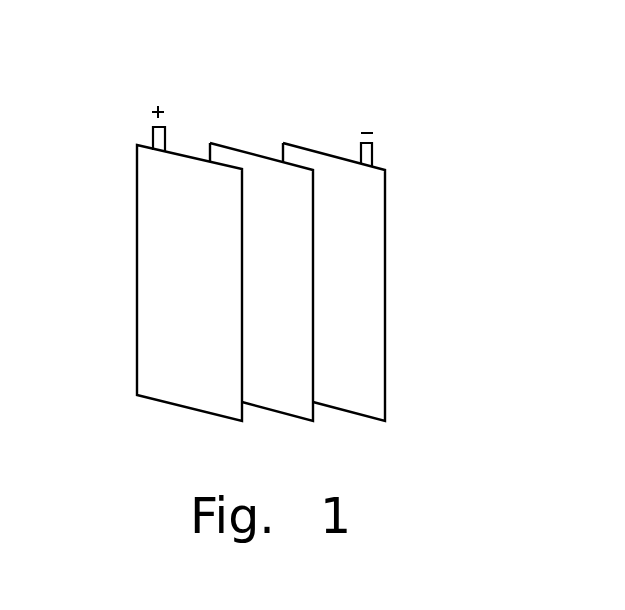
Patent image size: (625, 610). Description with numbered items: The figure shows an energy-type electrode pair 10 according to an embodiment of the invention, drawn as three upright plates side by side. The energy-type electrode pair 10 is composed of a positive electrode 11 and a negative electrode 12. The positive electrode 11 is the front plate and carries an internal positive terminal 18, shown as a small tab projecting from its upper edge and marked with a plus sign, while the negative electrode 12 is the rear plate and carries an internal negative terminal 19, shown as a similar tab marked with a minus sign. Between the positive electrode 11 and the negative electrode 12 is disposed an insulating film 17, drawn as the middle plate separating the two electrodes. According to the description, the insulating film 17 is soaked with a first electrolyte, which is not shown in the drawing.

The energy-type electrode pair 10 is at (102, 86).
The positive electrode 11 is at (137, 287).
The negative electrode 12 is at (385, 334).
The insulating film 17 is at (314, 375).
The internal positive terminal 18 is at (167, 137).
The internal negative terminal 19 is at (372, 153).